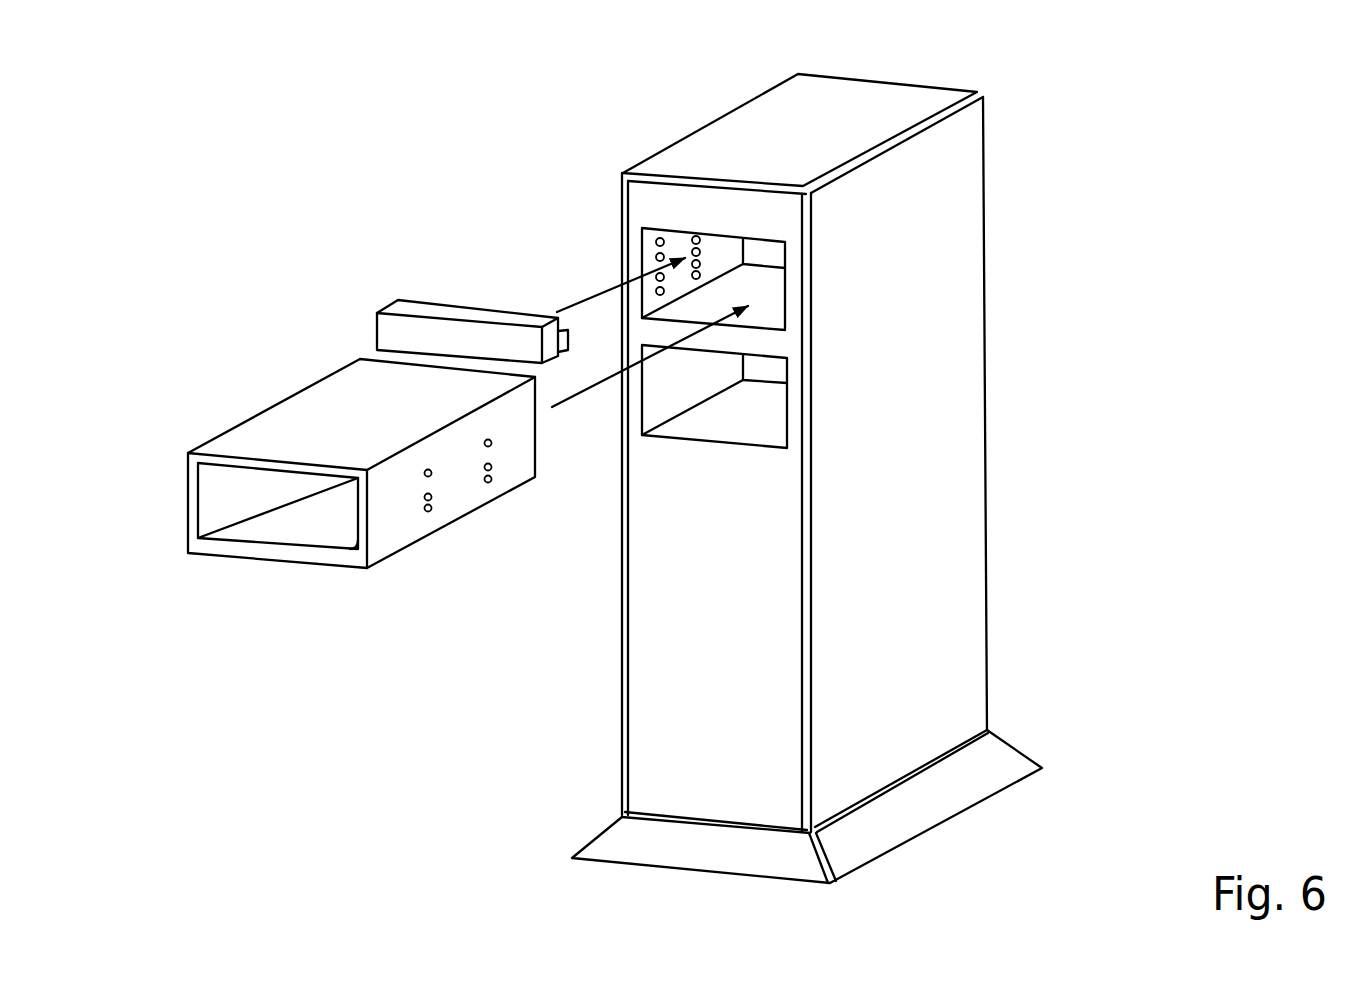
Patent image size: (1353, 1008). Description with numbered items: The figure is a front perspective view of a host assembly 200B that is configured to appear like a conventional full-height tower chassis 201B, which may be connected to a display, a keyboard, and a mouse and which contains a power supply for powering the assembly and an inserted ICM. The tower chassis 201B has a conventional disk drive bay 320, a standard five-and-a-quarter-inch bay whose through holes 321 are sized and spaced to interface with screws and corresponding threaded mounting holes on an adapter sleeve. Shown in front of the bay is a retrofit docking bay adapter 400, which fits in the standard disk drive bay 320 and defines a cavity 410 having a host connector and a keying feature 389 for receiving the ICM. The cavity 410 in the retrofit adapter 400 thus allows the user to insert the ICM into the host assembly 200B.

The host assembly 200B is at (871, 463).
The tower chassis 201B is at (962, 598).
The disk drive bay 320 is at (729, 250).
The through holes 321 is at (708, 250).
The retrofit docking bay adapter 400 is at (328, 479).
The cavity 410 is at (298, 523).
The keying feature 389 is at (352, 566).